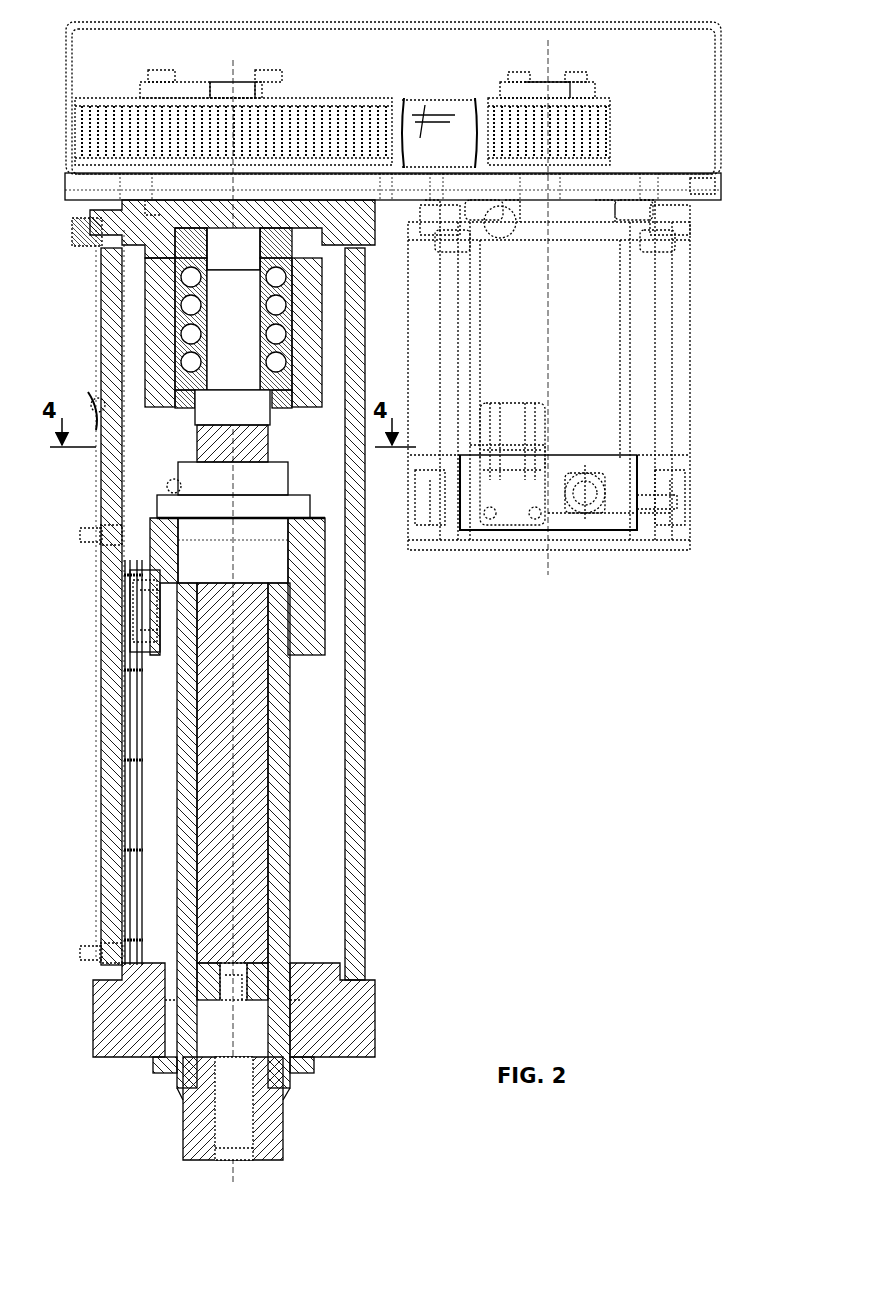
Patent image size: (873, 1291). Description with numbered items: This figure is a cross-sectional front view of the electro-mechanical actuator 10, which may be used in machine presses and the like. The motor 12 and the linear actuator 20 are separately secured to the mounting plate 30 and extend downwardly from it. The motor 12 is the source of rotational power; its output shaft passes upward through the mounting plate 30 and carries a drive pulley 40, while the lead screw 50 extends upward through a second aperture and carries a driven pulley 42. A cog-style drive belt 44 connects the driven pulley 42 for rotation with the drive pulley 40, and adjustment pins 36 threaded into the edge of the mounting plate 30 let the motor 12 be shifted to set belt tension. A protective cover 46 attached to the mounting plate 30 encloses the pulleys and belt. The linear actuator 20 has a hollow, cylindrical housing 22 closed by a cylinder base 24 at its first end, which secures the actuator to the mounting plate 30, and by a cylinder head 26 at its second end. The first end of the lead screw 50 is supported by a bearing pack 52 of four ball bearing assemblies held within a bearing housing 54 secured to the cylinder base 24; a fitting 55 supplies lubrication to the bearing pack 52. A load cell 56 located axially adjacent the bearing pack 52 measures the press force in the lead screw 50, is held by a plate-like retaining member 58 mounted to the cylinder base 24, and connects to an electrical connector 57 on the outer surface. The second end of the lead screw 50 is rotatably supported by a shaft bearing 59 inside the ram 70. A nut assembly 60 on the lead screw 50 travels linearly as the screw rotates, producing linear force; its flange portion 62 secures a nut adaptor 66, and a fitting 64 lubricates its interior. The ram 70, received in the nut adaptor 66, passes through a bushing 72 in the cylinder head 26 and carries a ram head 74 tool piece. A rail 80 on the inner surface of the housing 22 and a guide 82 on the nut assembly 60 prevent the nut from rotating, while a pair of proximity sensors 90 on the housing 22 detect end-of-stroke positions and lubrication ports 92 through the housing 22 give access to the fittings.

The electro-mechanical actuator 10 is at (748, 47).
The motor 12 is at (672, 376).
The linear actuator 20 is at (88, 300).
The housing 22 is at (112, 316).
The cylinder base 24 is at (105, 238).
The cylinder head 26 is at (103, 1035).
The mounting plate 30 is at (80, 190).
The adjustment pins 36 is at (721, 192).
The drive pulley 40 is at (590, 108).
The driven pulley 42 is at (345, 108).
The drive belt 44 is at (432, 125).
The protective cover 46 is at (716, 118).
The lead screw 50 is at (222, 716).
The bearing pack 52 is at (185, 346).
The bearing housing 54 is at (157, 366).
The fitting 55 is at (130, 408).
The load cell 56 is at (185, 250).
The electrical connector 57 is at (72, 235).
The retaining member 58 is at (175, 210).
The shaft bearing 59 is at (207, 972).
The nut assembly 60 is at (200, 476).
The flange portion 62 is at (190, 507).
The fitting 64 is at (168, 487).
The nut adaptor 66 is at (165, 545).
The ram 70 is at (190, 788).
The bushing 72 is at (162, 1068).
The ram head 74 is at (200, 1148).
The rail 80 is at (135, 704).
The guide 82 is at (148, 612).
The proximity sensors 90 is at (82, 535).
The lubrication ports 92 is at (96, 404).